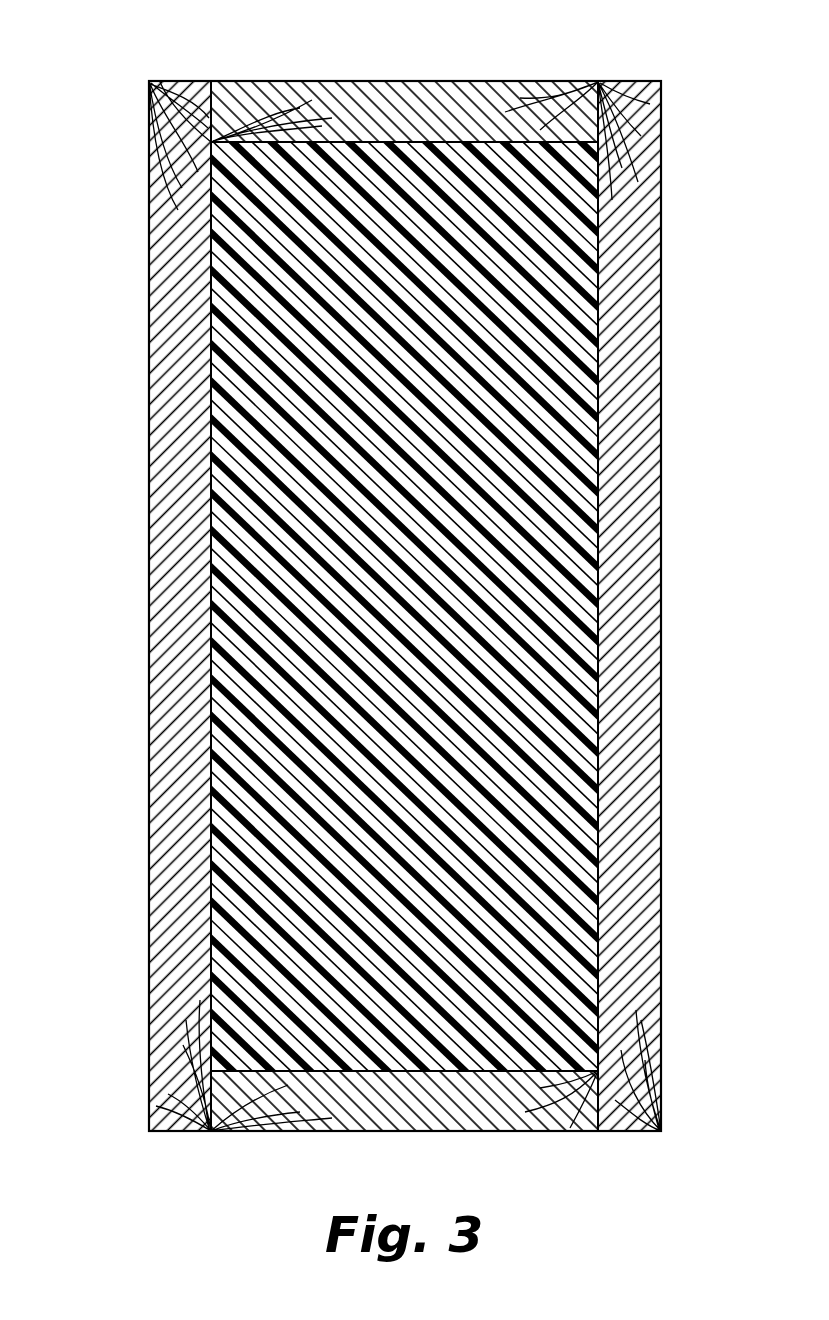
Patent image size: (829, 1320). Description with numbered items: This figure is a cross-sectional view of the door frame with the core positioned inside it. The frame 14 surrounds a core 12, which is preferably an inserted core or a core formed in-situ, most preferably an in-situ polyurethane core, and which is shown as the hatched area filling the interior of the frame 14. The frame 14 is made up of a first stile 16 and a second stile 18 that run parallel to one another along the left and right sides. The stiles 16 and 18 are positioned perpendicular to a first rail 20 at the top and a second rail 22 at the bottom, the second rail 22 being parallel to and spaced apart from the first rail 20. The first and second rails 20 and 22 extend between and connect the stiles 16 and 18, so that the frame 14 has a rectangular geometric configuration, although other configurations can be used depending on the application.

The core 12 is at (595, 831).
The frame 14 is at (676, 1043).
The first stile 16 is at (150, 262).
The second stile 18 is at (647, 788).
The first rail 20 is at (362, 100).
The second rail 22 is at (322, 1083).